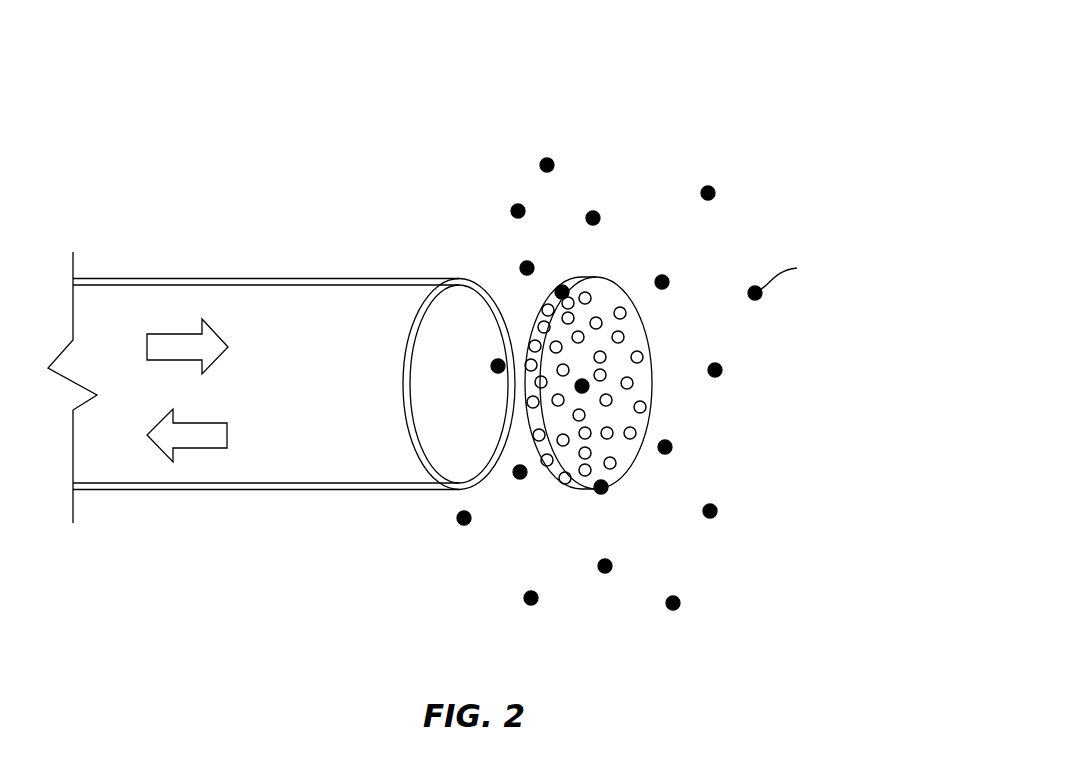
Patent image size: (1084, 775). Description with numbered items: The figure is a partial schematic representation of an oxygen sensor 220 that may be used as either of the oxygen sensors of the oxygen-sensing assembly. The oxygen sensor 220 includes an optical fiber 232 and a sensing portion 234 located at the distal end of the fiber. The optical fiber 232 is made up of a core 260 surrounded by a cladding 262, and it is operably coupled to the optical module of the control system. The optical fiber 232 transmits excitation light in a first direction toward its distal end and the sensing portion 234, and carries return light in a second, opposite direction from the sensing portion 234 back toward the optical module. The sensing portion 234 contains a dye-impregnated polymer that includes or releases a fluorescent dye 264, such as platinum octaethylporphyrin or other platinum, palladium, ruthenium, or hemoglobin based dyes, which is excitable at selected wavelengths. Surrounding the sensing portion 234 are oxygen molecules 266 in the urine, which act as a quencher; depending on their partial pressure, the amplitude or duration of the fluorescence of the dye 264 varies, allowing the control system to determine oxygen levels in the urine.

The oxygen sensor 220 is at (366, 98).
The optical fiber 232 is at (221, 277).
The core 260 is at (457, 310).
The cladding 262 is at (422, 483).
The sensing portion 234 is at (608, 293).
The dye 264 is at (634, 383).
The oxygen molecules 266 is at (718, 516).